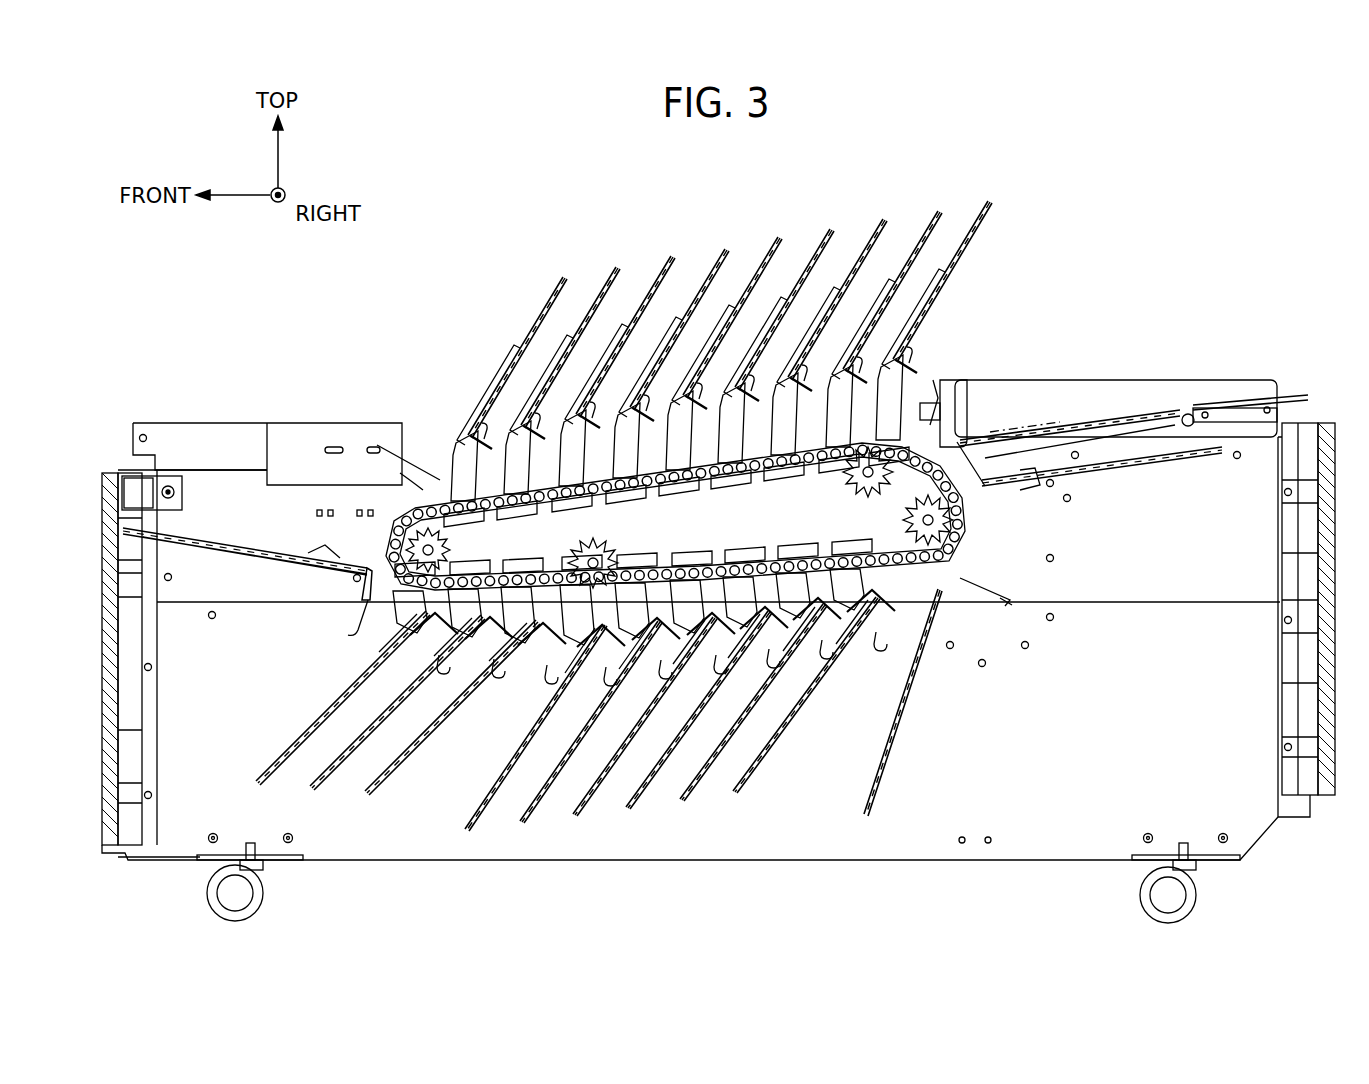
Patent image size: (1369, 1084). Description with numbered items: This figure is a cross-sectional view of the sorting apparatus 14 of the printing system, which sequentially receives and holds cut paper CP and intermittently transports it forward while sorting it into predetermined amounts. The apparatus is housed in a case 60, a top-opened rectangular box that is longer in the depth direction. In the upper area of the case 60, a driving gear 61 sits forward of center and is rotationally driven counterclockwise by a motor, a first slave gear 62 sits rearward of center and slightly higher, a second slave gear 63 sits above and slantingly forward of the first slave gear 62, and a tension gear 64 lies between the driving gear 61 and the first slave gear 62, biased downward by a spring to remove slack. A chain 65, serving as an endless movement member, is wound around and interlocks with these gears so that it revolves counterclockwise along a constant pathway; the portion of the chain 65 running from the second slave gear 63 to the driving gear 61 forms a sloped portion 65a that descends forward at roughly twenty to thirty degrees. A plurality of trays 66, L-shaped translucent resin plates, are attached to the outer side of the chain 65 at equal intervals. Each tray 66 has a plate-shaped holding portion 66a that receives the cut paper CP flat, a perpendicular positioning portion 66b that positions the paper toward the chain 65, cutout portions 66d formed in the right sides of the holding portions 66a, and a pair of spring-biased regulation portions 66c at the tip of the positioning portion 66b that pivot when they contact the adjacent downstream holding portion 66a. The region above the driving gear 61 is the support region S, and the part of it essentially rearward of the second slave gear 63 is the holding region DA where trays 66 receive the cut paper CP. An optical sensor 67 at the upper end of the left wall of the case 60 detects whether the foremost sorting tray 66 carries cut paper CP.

The sorting apparatus 14 is at (1253, 243).
The holding region DA is at (1151, 320).
The support region S is at (412, 326).
The cut paper CP is at (1060, 398).
The case 60 is at (1266, 834).
The driving gear 61 is at (450, 548).
The first slave gear 62 is at (905, 512).
The second slave gear 63 is at (845, 478).
The tension gear 64 is at (620, 560).
The chain 65 is at (705, 480).
The sloped portion 65a is at (648, 492).
The tray 66 is at (870, 798).
The holding portion 66a is at (1105, 412).
The positioning portion 66b is at (968, 400).
The regulation portion 66c is at (990, 590).
The cutout portion 66d is at (825, 678).
The optical sensor 67 is at (368, 447).